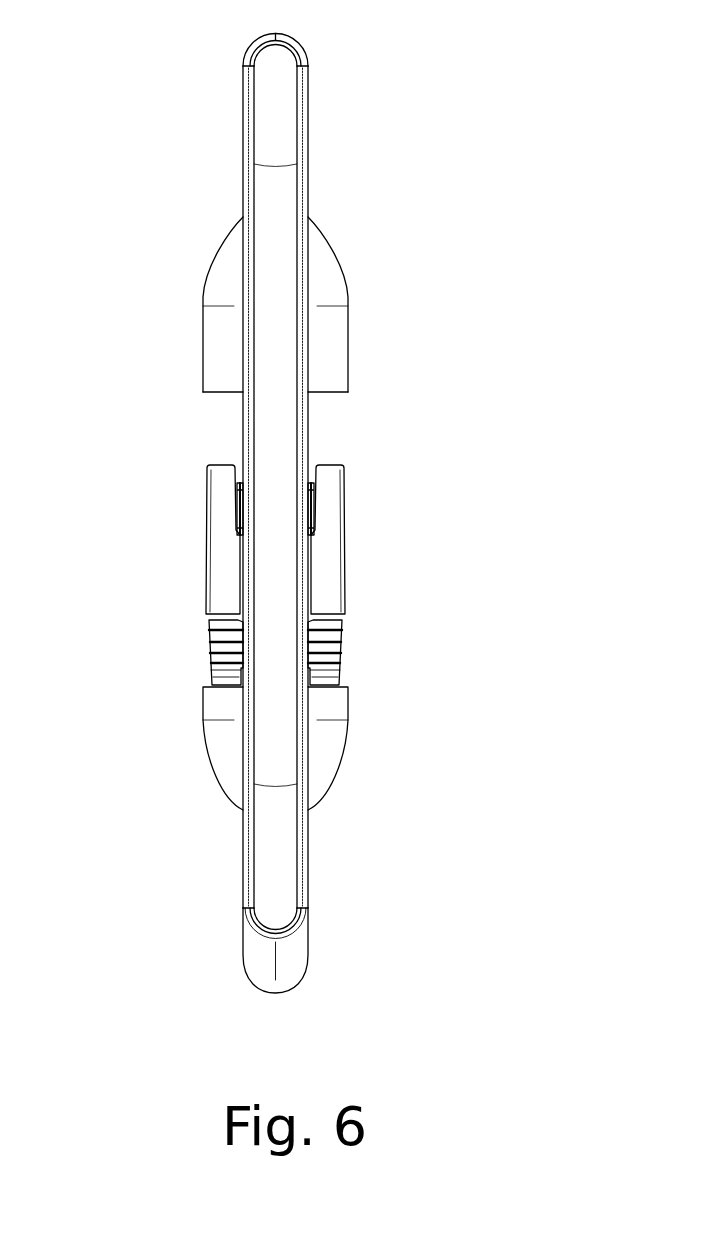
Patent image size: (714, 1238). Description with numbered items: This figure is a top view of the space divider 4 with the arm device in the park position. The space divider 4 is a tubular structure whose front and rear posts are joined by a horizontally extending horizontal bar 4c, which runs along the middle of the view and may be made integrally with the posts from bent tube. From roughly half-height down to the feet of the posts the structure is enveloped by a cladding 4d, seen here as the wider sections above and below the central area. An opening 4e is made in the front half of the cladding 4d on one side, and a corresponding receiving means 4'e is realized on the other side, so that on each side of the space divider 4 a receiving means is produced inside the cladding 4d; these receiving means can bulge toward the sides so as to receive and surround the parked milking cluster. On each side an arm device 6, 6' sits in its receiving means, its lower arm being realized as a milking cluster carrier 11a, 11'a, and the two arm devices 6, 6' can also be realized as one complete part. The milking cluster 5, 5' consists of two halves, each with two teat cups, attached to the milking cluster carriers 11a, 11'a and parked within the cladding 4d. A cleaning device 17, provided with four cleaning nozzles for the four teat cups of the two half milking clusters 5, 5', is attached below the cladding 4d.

The space divider 4 is at (279, 514).
The horizontal bar 4c is at (277, 283).
The cladding 4d is at (215, 279).
The opening 4e is at (210, 412).
The receiving means 4'e is at (387, 376).
The arm device 6 is at (153, 536).
The arm device 6' is at (401, 520).
The milking cluster carrier 11a is at (219, 590).
The milking cluster carrier 11'a is at (401, 526).
The milking cluster 5 is at (168, 642).
The milking cluster 5' is at (373, 638).
The cleaning device 17 is at (230, 736).